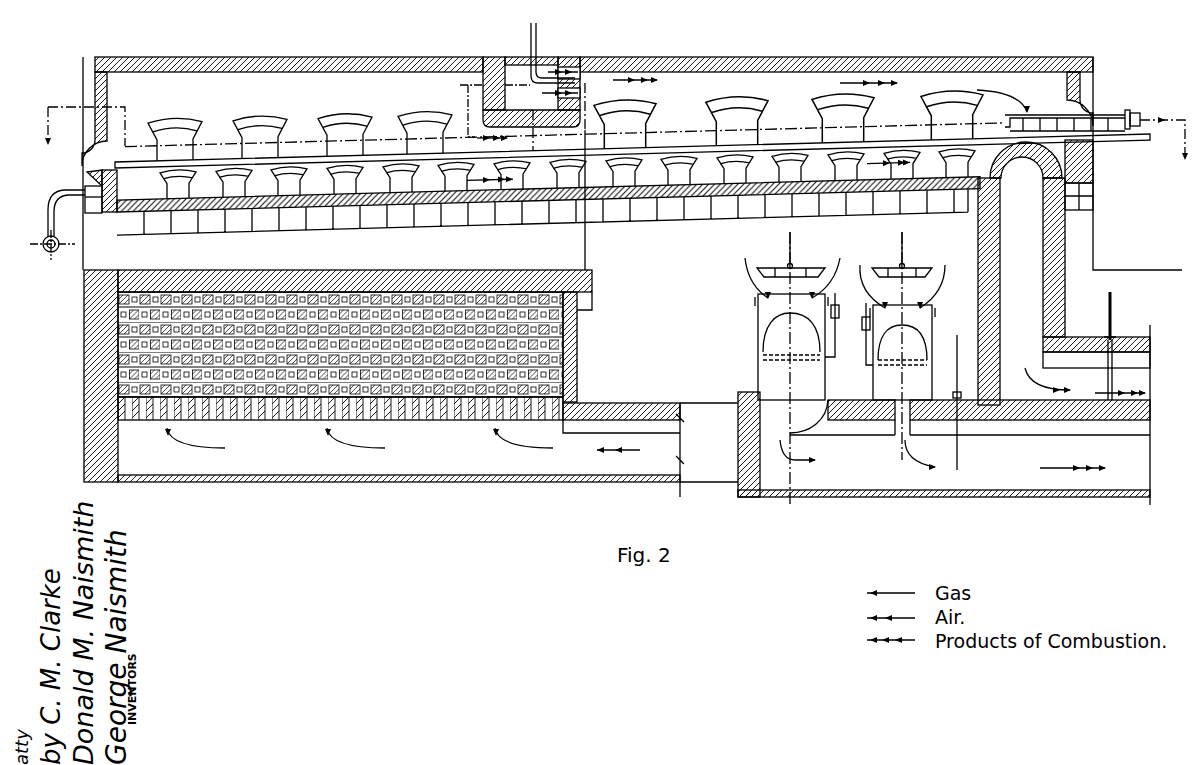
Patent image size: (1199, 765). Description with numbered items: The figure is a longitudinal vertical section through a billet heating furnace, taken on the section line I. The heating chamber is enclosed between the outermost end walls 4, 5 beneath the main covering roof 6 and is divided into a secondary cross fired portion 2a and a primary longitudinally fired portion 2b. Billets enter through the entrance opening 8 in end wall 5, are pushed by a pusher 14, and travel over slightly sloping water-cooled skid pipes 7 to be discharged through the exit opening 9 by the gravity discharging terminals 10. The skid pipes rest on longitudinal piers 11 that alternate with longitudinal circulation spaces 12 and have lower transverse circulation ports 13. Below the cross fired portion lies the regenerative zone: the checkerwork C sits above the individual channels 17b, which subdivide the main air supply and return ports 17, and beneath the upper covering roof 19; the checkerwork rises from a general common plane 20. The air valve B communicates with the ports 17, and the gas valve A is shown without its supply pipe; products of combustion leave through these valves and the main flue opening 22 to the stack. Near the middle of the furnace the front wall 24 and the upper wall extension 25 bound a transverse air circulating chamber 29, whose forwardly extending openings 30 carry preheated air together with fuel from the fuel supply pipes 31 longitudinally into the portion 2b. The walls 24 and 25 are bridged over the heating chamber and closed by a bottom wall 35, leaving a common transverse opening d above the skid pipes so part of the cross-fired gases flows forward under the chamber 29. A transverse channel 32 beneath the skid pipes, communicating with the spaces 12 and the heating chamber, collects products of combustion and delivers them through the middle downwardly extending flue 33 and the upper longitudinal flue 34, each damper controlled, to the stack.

The secondary cross fired portion 2a is at (399, 110).
The primary longitudinally fired portion 2b is at (821, 95).
The outermost end wall 4 is at (93, 88).
The outermost end wall 5 is at (1093, 158).
The main covering roof 6 is at (314, 57).
The water-cooled skid pipes 7 is at (684, 165).
The entrance opening 8 is at (1094, 118).
The exit opening 9 is at (95, 170).
The gravity discharging terminals 10 is at (85, 191).
The longitudinal piers 11 is at (267, 186).
The longitudinal circulation spaces 12 is at (548, 197).
The lower transverse circulation ports 13 is at (352, 190).
The pusher 14 is at (1136, 112).
The main air supply and return ports 17 is at (399, 442).
The individual channels 17b is at (359, 444).
The upper covering roof 19 is at (384, 271).
The general common plane 20 is at (703, 403).
The main flue opening 22 is at (944, 415).
The front wall 24 is at (580, 100).
The upper wall extension 25 is at (483, 93).
The air circulating chamber 29 is at (531, 82).
The forwardly extending openings 30 is at (577, 72).
The fuel supply pipes 31 is at (530, 45).
The transverse channel 32 is at (1001, 162).
The middle downwardly extending flue 33 is at (1021, 291).
The upper longitudinal flue 34 is at (1130, 390).
The bottom wall 35 is at (548, 118).
The gas valve A is at (907, 351).
The air valve B is at (778, 341).
The checkerwork C is at (462, 330).
The common transverse opening d is at (502, 140).
The section line I is at (614, 143).